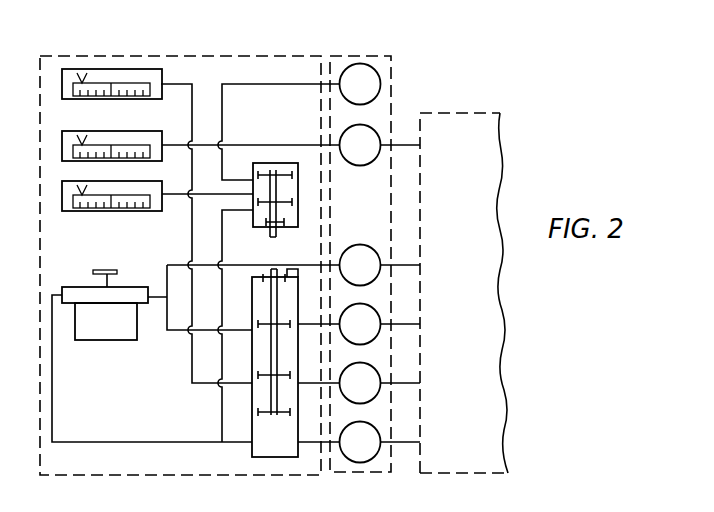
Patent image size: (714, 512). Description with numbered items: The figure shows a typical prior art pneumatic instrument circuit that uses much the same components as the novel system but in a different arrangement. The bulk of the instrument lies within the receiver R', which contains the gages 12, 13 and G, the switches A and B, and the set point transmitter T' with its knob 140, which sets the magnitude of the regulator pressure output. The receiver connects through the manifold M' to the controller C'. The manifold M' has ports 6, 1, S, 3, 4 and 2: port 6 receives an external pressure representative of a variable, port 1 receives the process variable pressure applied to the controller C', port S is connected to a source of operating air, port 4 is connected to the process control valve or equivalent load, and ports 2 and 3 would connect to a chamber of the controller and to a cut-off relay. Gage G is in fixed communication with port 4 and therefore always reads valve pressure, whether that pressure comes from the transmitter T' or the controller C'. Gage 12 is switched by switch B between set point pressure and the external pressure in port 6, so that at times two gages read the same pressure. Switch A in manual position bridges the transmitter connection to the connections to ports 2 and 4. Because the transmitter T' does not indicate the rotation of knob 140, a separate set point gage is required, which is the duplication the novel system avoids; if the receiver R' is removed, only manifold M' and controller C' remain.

The receiver R' is at (180, 251).
The manifold M' is at (360, 250).
The controller C' is at (464, 280).
The gage G is at (163, 71).
The gage 13 is at (150, 132).
The gage 12 is at (150, 182).
The knob 140 is at (115, 268).
The set point transmitter T' is at (105, 332).
The switch B is at (253, 172).
The switch A is at (252, 291).
The port 6 is at (360, 84).
The port 1 is at (360, 145).
The port S is at (360, 265).
The port 3 is at (360, 324).
The port 4 is at (360, 383).
The port 2 is at (360, 442).